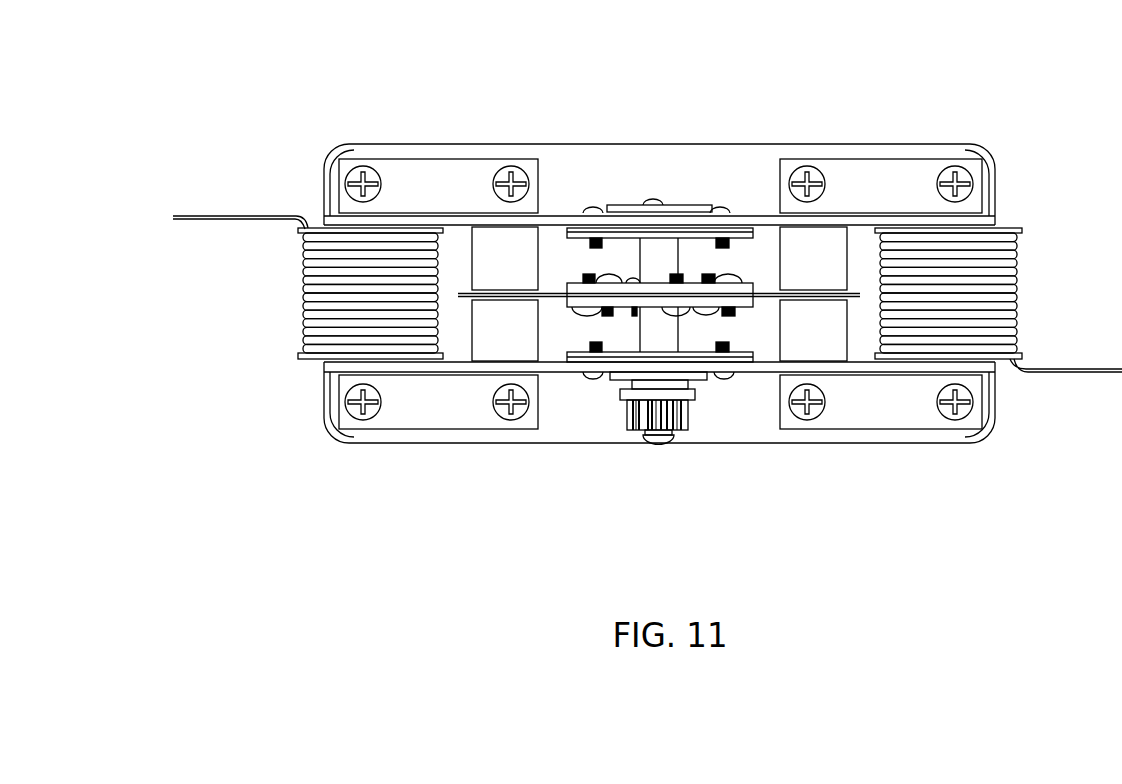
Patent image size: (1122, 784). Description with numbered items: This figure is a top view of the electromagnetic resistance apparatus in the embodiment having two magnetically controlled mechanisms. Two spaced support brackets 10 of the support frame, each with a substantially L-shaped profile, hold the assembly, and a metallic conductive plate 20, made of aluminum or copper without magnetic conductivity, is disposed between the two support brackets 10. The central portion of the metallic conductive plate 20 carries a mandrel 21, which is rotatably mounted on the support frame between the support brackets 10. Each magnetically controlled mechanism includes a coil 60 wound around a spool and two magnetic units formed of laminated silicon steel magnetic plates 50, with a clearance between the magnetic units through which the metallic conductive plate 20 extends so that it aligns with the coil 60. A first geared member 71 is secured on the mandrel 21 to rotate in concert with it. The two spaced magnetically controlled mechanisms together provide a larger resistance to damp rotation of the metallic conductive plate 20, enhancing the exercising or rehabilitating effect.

The support bracket 10 is at (750, 173).
The metallic conductive plate 20 is at (547, 288).
The mandrel 21 is at (657, 263).
The magnetic plate 50 is at (493, 247).
The coil 60 is at (313, 307).
The first geared member 71 is at (650, 423).